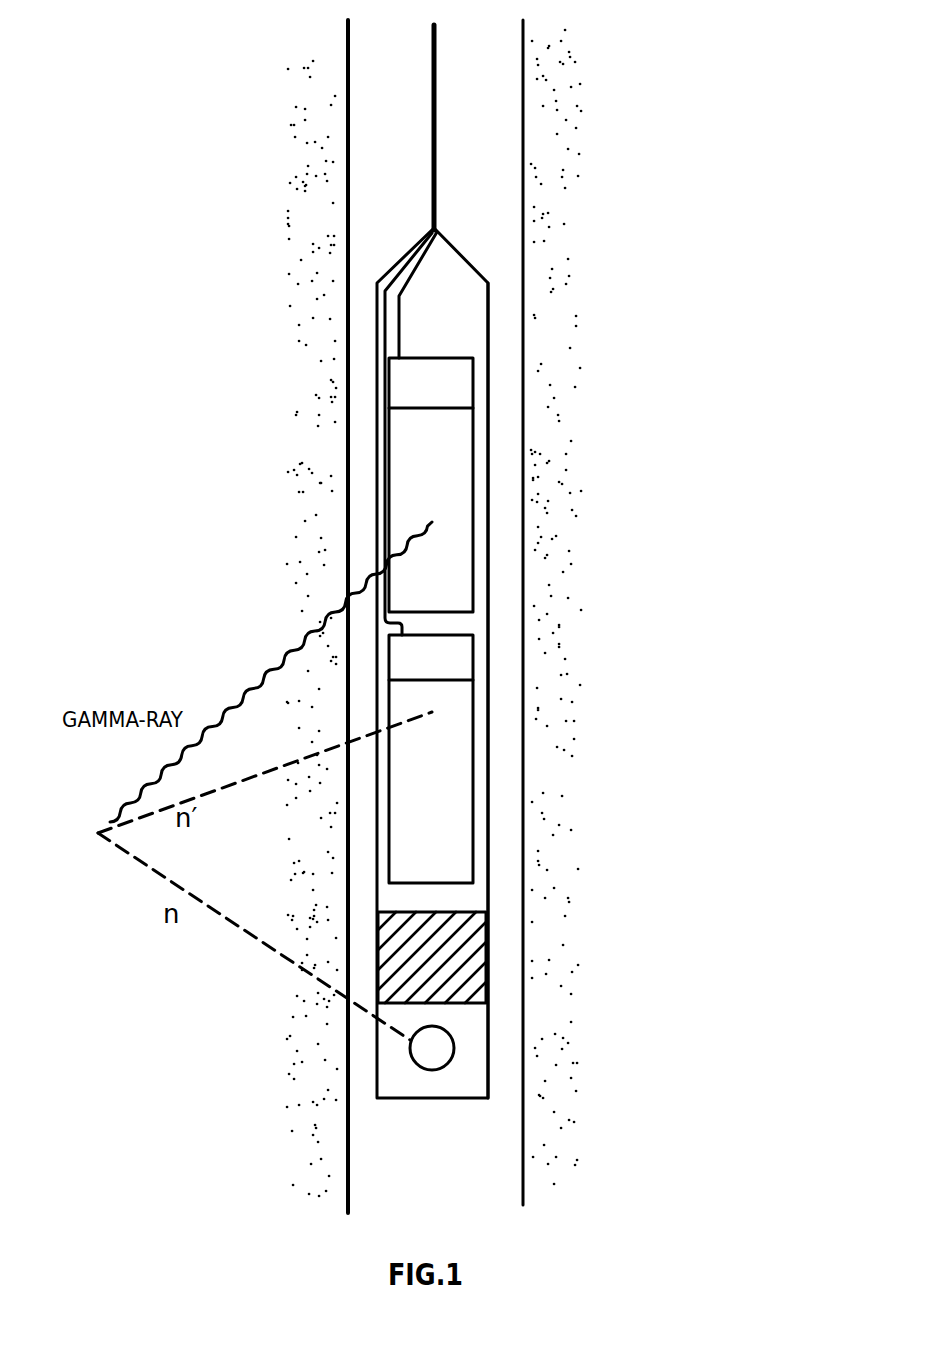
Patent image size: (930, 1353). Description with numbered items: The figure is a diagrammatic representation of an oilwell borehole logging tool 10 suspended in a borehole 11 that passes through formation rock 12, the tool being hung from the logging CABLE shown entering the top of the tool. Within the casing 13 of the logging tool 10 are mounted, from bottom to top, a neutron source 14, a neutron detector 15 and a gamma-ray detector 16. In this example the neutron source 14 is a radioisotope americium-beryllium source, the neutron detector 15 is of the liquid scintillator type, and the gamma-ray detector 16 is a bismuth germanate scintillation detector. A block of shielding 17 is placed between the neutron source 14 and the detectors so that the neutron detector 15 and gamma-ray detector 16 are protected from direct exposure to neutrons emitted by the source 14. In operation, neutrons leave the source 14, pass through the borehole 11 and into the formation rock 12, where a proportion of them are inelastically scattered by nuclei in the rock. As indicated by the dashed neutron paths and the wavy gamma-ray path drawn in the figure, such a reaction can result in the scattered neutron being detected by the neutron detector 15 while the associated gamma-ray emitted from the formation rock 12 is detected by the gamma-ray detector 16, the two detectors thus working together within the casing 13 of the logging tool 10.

The logging tool 10 is at (400, 258).
The borehole 11 is at (501, 138).
The formation rock 12 is at (569, 79).
The casing 13 is at (488, 348).
The neutron source 14 is at (440, 1053).
The neutron detector 15 is at (450, 777).
The gamma-ray detector 16 is at (455, 453).
The shielding 17 is at (468, 957).
The logging cable CABLE is at (436, 190).